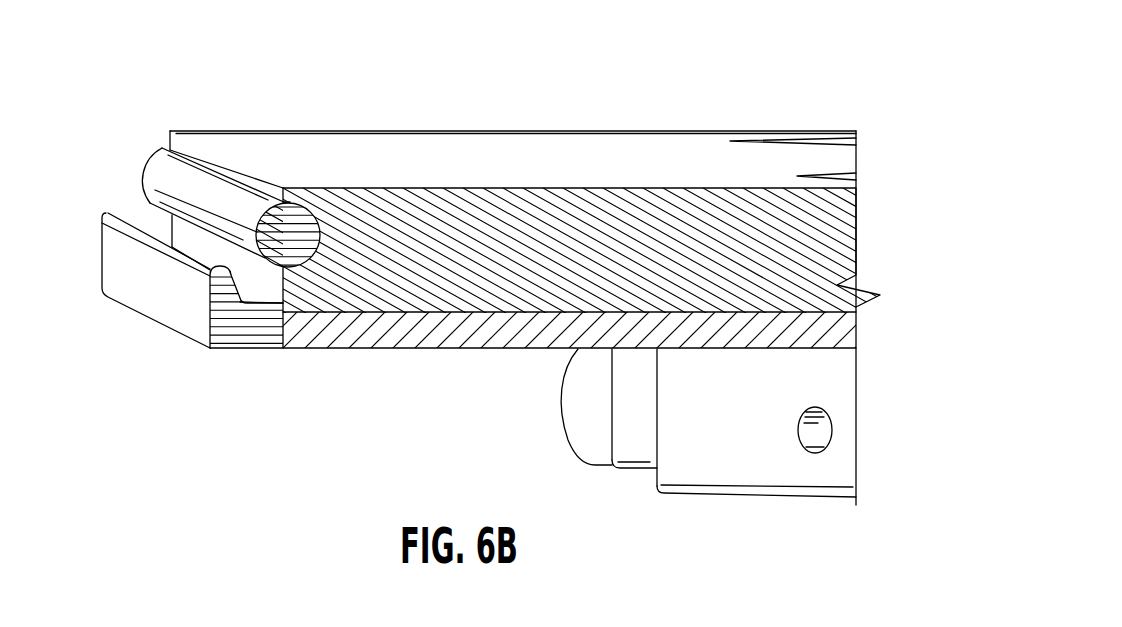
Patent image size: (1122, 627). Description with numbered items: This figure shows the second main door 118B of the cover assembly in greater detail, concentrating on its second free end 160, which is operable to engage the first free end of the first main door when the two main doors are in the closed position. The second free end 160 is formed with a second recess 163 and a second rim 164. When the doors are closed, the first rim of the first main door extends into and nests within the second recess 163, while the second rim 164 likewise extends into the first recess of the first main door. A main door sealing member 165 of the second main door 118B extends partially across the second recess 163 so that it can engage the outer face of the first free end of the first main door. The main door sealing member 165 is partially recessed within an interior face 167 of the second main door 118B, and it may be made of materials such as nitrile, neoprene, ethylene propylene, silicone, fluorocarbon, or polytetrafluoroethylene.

The second main door 118B is at (632, 112).
The second free end 160 is at (180, 322).
The second recess 163 is at (150, 215).
The second rim 164 is at (110, 213).
The main door sealing member 165 is at (291, 225).
The interior face 167 is at (270, 281).